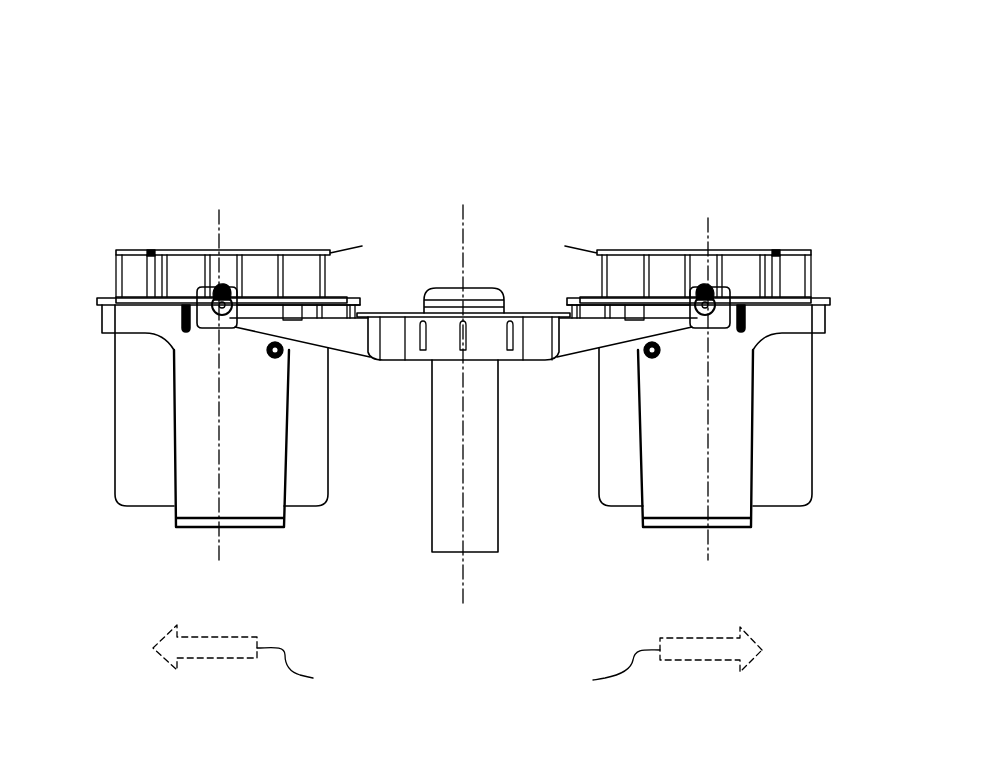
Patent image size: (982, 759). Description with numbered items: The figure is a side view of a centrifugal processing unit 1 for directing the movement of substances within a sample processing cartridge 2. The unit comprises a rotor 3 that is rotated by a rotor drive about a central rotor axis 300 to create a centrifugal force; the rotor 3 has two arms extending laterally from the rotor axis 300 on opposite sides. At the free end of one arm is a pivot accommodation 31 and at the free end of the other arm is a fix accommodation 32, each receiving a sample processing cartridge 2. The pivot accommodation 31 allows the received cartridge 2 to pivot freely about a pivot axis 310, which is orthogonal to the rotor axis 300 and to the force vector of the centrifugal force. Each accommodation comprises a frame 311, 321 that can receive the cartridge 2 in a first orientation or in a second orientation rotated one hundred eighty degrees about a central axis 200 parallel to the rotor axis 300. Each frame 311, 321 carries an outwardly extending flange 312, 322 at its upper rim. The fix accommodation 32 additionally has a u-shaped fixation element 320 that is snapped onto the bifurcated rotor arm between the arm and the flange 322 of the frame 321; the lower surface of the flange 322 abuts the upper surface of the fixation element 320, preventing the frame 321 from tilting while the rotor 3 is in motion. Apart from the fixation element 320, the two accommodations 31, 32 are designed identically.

The centrifugal processing unit 1 is at (155, 108).
The sample processing cartridge 2 is at (131, 417).
The rotor 3 is at (430, 508).
The pivot accommodation 31 is at (737, 228).
The fix accommodation 32 is at (263, 230).
The central axis 200 is at (220, 212).
The rotor axis 300 is at (463, 597).
The pivot axis 310 is at (647, 297).
The frame 311 is at (727, 503).
The flange 312 is at (833, 300).
The fixation element 320 is at (357, 303).
The frame 321 is at (198, 500).
The flange 322 is at (102, 298).